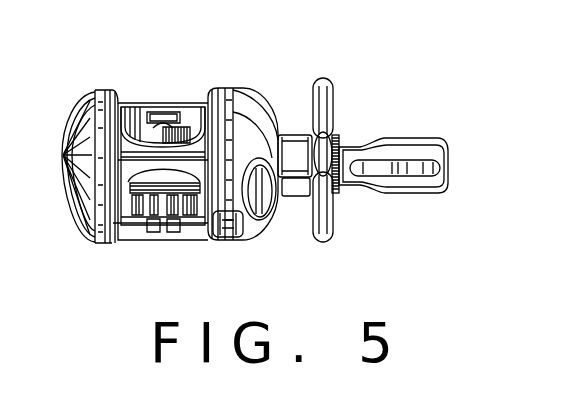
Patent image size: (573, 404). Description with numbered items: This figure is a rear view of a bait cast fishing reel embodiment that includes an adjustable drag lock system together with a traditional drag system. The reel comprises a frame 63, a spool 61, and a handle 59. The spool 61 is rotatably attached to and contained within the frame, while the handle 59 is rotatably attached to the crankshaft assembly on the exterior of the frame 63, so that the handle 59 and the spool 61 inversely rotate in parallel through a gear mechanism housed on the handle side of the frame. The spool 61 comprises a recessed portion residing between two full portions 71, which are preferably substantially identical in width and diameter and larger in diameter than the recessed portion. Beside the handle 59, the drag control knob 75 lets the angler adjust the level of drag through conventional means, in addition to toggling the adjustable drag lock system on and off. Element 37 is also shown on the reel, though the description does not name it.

The side plate 37 is at (137, 168).
The handle 59 is at (388, 138).
The spool 61 is at (166, 192).
The frame 63 is at (250, 128).
The full portions 71 is at (195, 101).
The drag control knob 75 is at (322, 78).